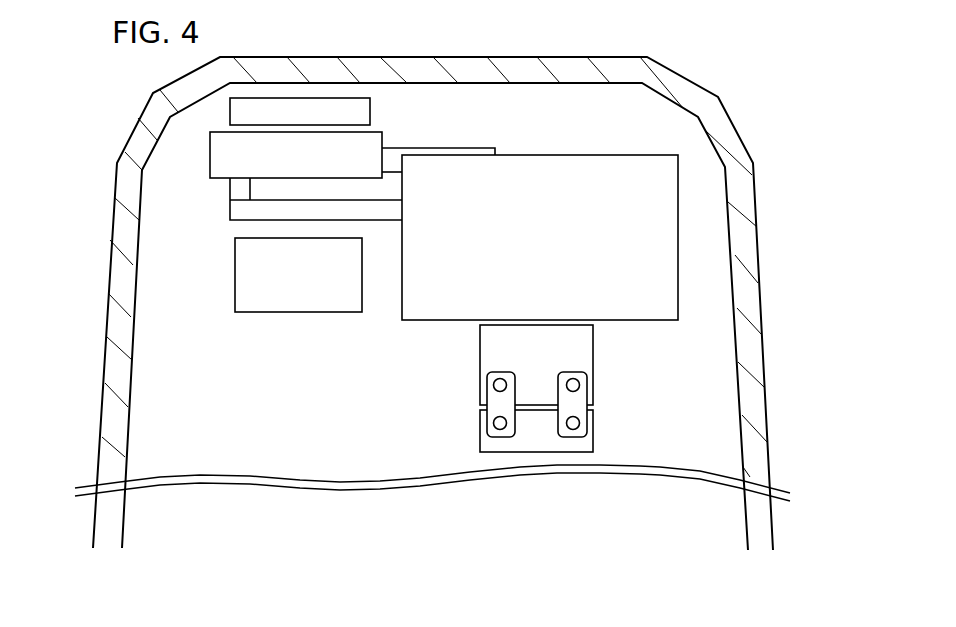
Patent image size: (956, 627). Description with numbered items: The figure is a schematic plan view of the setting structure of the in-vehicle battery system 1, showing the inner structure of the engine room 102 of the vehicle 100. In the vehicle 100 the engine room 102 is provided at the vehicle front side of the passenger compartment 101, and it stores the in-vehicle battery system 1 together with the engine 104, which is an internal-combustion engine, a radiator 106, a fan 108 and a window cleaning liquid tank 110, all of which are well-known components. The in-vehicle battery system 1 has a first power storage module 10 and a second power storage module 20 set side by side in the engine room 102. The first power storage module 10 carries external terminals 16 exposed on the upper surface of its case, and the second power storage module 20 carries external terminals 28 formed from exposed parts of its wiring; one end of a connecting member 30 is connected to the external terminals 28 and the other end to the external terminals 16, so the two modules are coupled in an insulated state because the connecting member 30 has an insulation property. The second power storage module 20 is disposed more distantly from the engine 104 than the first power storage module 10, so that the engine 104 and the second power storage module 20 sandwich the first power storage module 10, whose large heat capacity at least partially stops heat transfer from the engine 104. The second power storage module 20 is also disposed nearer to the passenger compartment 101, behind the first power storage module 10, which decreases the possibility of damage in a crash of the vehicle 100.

The in-vehicle battery system 1 is at (539, 432).
The first power storage module 10 is at (593, 347).
The external terminals 16 is at (493, 385).
The second power storage module 20 is at (593, 437).
The external terminals 28 is at (500, 430).
The connecting member 30 is at (498, 408).
The vehicle 100 is at (456, 603).
The passenger compartment 101 is at (148, 528).
The engine room 102 is at (148, 380).
The engine 104 is at (678, 277).
The radiator 106 is at (210, 150).
The fan 108 is at (230, 112).
The window cleaning liquid tank 110 is at (235, 270).